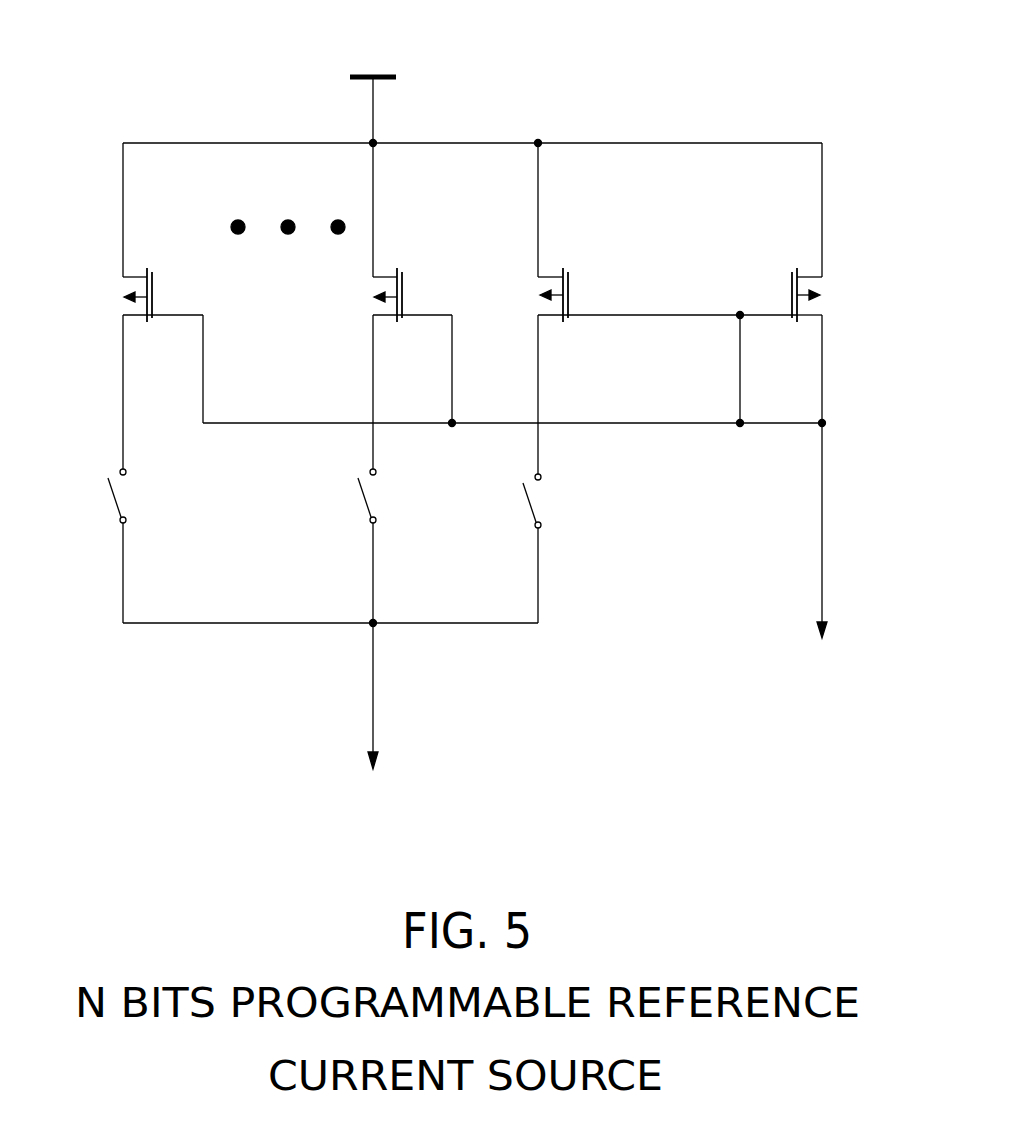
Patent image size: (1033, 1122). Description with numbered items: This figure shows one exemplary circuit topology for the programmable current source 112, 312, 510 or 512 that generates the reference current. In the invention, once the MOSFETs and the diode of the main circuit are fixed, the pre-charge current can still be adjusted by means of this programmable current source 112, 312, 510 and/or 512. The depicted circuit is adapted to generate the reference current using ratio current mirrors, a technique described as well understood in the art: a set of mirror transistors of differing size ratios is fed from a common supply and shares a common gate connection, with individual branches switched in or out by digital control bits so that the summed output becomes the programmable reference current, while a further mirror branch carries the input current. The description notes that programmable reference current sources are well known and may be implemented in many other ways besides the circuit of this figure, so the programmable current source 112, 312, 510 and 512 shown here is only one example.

The programmable current source 112 is at (476, 388).
The programmable current source 312 is at (476, 388).
The programmable current source 510 is at (476, 388).
The programmable current source 512 is at (658, 137).